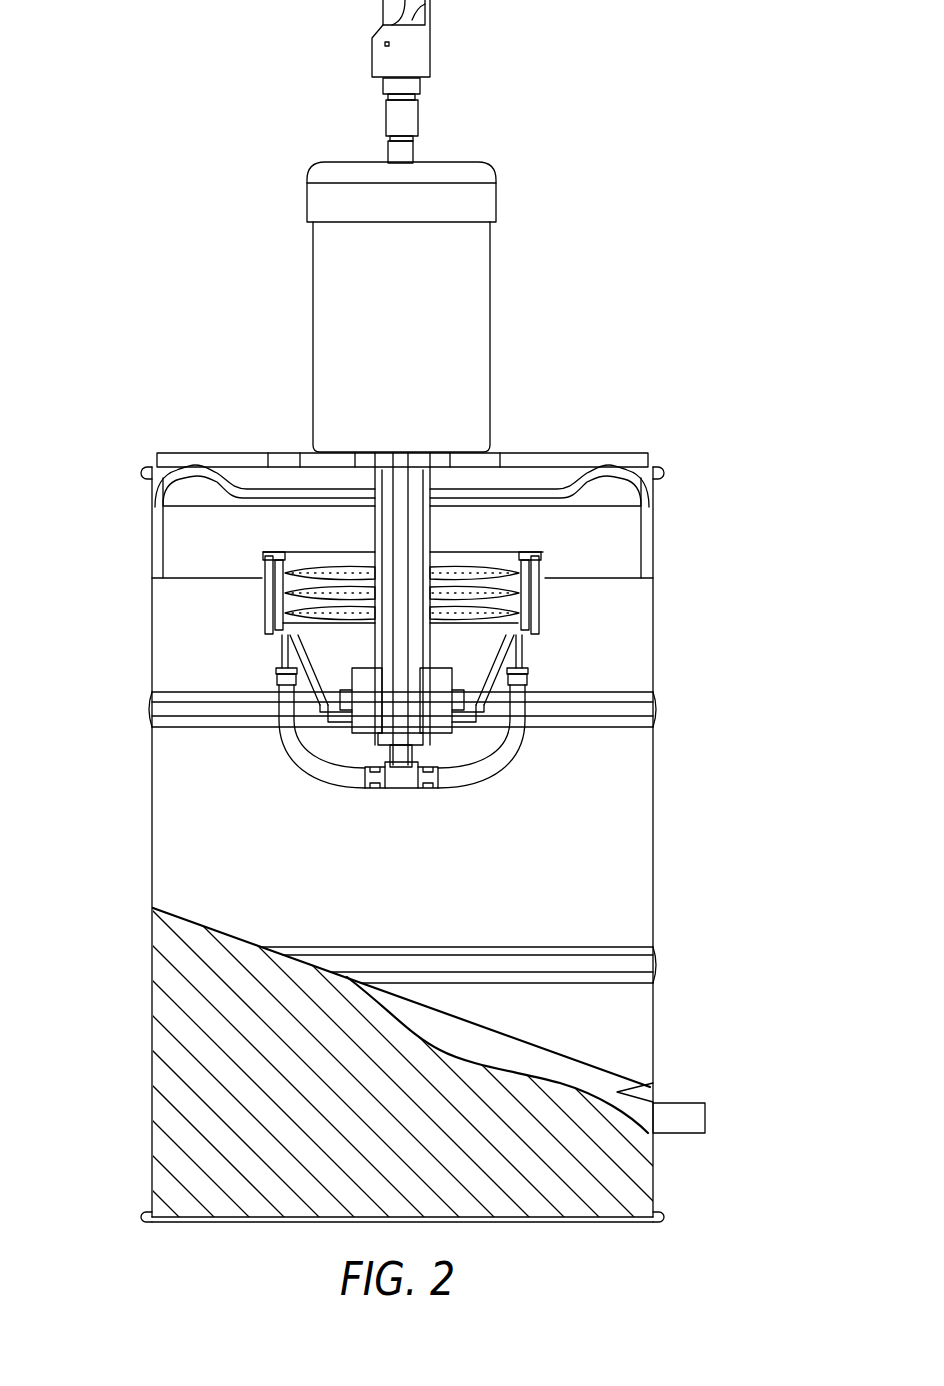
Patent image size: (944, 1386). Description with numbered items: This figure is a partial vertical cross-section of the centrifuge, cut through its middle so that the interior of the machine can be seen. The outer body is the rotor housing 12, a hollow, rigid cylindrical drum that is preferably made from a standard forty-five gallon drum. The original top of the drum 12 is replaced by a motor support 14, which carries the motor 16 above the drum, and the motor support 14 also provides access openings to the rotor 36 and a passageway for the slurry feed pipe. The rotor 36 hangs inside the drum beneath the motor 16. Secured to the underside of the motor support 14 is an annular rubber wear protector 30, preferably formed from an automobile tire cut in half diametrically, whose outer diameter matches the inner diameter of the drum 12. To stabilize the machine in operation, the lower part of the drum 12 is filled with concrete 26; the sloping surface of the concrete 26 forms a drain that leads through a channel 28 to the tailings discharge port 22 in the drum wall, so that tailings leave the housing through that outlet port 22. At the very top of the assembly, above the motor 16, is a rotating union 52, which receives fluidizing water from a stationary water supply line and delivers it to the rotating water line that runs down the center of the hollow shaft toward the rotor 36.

The rotor housing 12 is at (152, 793).
The motor support 14 is at (204, 455).
The motor 16 is at (490, 262).
The tailings discharge port 22 is at (706, 1117).
The concrete 26 is at (167, 1012).
The channel 28 is at (605, 1080).
The annular rubber wear protector 30 is at (178, 517).
The rotor 36 is at (313, 645).
The rotating union 52 is at (430, 42).